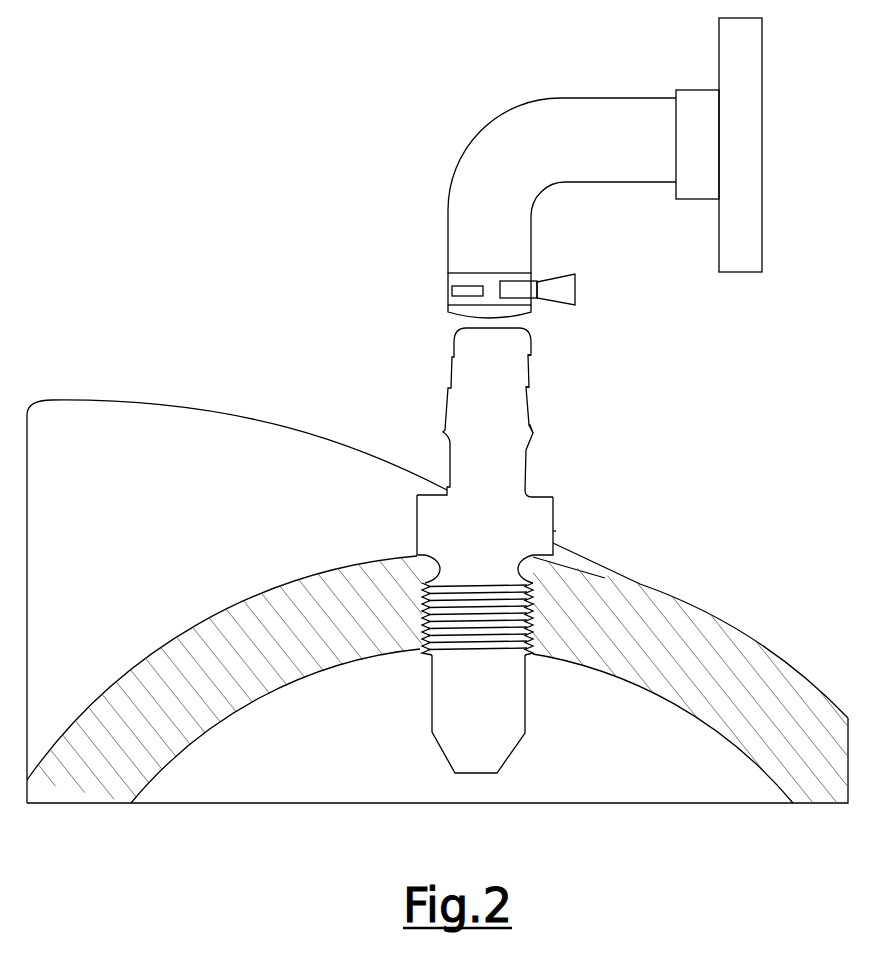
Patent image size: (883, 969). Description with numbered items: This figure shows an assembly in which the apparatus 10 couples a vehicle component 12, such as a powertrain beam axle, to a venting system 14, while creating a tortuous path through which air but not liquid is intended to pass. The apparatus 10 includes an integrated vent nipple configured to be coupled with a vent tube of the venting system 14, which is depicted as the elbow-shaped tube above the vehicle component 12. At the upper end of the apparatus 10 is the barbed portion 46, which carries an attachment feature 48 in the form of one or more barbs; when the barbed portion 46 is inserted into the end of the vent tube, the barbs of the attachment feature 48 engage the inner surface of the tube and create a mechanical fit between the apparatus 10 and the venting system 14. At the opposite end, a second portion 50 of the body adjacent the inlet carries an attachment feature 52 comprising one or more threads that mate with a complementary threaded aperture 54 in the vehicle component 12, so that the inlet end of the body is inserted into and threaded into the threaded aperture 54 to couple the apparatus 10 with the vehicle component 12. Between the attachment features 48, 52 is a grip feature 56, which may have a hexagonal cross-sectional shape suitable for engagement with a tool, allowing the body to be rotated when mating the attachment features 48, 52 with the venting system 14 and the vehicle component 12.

The apparatus 10 is at (555, 497).
The vehicle component 12 is at (282, 412).
The venting system 14 is at (498, 207).
The barbed portion 46 is at (412, 362).
The attachment feature 48 is at (531, 423).
The second portion 50 is at (422, 606).
The attachment feature 52 is at (525, 617).
The threaded aperture 54 is at (427, 568).
The grip feature 56 is at (556, 532).